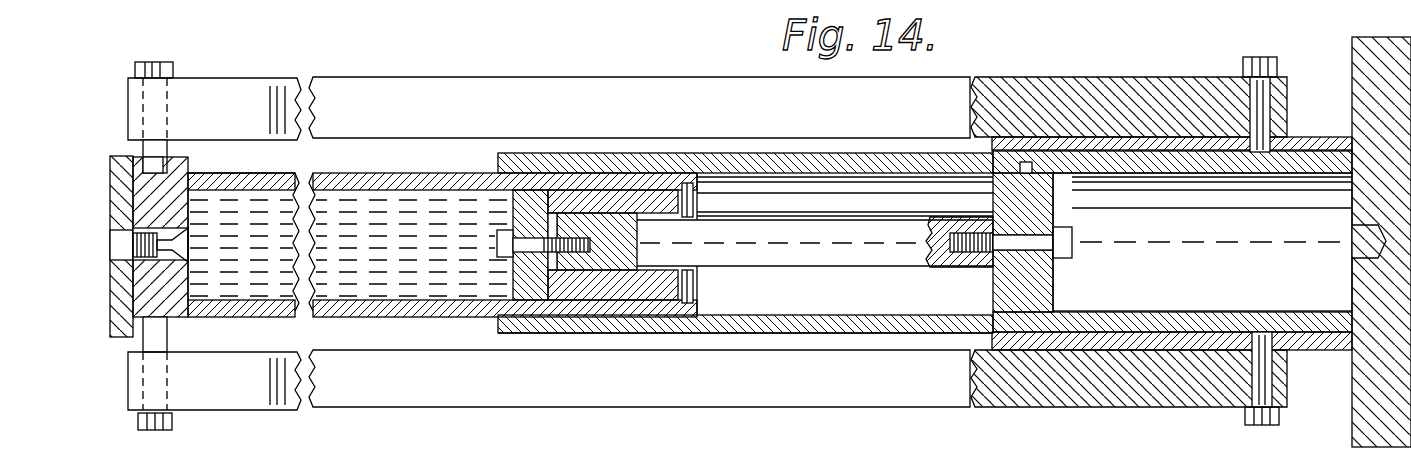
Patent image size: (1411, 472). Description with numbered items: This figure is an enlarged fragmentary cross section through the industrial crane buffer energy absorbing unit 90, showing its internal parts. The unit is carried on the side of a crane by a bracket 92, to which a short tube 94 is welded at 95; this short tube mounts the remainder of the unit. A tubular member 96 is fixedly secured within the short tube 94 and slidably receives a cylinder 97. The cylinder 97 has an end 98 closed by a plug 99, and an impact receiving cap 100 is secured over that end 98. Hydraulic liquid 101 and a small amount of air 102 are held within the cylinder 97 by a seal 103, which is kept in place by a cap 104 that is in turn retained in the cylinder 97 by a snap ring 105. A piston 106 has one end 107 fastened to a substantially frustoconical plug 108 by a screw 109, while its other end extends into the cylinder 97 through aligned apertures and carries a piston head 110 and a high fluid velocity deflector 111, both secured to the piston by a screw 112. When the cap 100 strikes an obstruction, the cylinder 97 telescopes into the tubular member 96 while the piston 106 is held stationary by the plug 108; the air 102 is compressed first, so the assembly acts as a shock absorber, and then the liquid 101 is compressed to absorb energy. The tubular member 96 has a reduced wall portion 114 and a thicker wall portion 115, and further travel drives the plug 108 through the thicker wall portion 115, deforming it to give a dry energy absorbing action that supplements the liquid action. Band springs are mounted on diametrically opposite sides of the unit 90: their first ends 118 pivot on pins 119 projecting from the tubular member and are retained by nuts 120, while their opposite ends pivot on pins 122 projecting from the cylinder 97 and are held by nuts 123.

The industrial crane buffer energy absorbing unit 90 is at (622, 58).
The bracket 92 is at (1362, 402).
The short tube 94 is at (1128, 340).
The weld 95 is at (1350, 132).
The tubular member 96 is at (878, 333).
The cylinder 97 is at (335, 175).
The end 98 is at (153, 293).
The plug 99 is at (112, 215).
The impact receiving cap 100 is at (112, 176).
The hydraulic liquid 101 is at (363, 252).
The air 102 is at (425, 190).
The seal 103 is at (600, 302).
The cap 104 is at (660, 172).
The snap ring 105 is at (697, 292).
The piston 106 is at (848, 252).
The end 107 is at (962, 266).
The plug 108 is at (1040, 263).
The screw 109 is at (1058, 237).
The piston head 110 is at (530, 300).
The high fluid velocity deflector 111 is at (565, 330).
The screw 112 is at (497, 243).
The reduced wall portion 114 is at (800, 325).
The thicker wall portion 115 is at (1222, 318).
The first ends 118 is at (1195, 92).
The pins 119 is at (1262, 95).
The nuts 120 is at (1027, 173).
The pins 122 is at (143, 380).
The nuts 123 is at (160, 32).